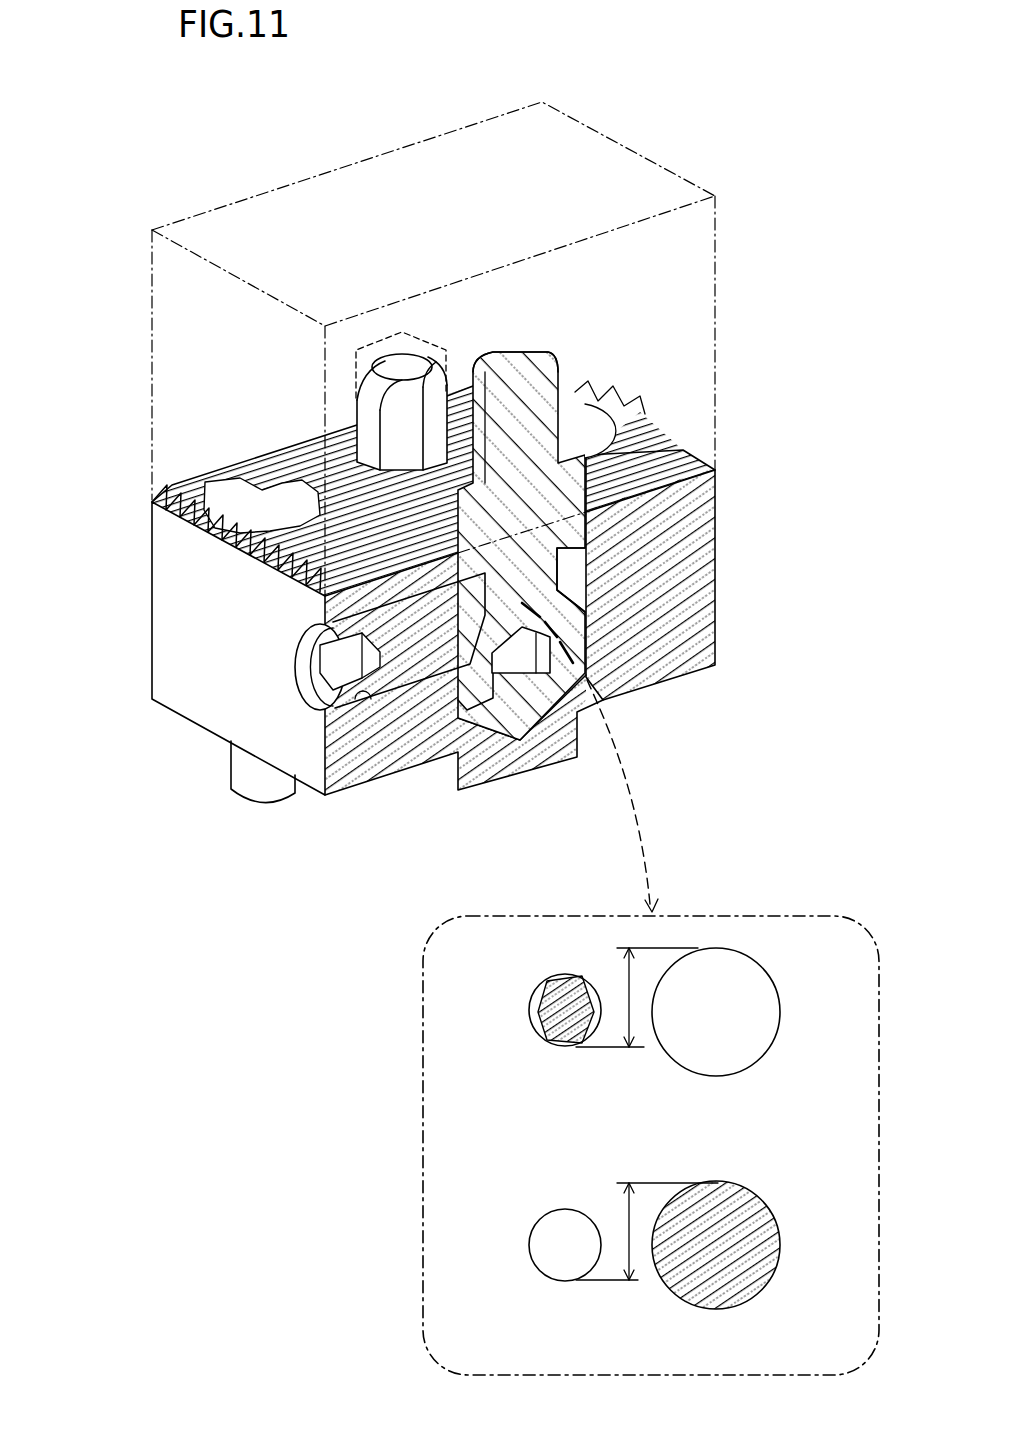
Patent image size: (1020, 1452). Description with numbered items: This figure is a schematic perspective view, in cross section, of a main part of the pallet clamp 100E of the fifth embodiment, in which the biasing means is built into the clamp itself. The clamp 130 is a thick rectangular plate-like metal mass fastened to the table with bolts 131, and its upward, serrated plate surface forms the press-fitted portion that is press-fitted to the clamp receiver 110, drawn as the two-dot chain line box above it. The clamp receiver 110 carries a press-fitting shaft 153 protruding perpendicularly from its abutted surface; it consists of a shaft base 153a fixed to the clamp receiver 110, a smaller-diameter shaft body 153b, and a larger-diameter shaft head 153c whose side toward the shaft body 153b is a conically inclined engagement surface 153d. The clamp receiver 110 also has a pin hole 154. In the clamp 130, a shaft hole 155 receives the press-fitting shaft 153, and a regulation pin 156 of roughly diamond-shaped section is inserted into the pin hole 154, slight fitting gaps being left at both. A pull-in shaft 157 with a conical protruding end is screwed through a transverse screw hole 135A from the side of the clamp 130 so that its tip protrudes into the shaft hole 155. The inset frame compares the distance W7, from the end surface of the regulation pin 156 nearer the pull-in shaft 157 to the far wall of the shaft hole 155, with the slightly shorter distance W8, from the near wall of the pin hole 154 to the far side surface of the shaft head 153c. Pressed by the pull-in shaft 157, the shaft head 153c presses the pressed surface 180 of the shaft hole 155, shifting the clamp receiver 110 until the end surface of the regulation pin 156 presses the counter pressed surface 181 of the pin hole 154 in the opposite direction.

The pallet clamp 100E is at (403, 99).
The clamp receiver 110 is at (613, 131).
The clamp 130 is at (150, 628).
The bolt 131 is at (262, 794).
The hole 135A is at (366, 702).
The press-fitting shaft 153 is at (760, 1245).
The shaft base 153a is at (620, 447).
The shaft body 153b is at (545, 389).
The shaft head 153c is at (478, 692).
The engagement surface 153d is at (575, 588).
The pin hole 154 is at (430, 346).
The shaft hole 155 is at (543, 706).
The regulation pin 156 is at (397, 360).
The pull-in shaft 157 is at (336, 666).
The pressed surface 180 is at (578, 623).
The counter pressed surface 181 is at (360, 384).
The distance W7 is at (618, 980).
The distance W8 is at (618, 1214).